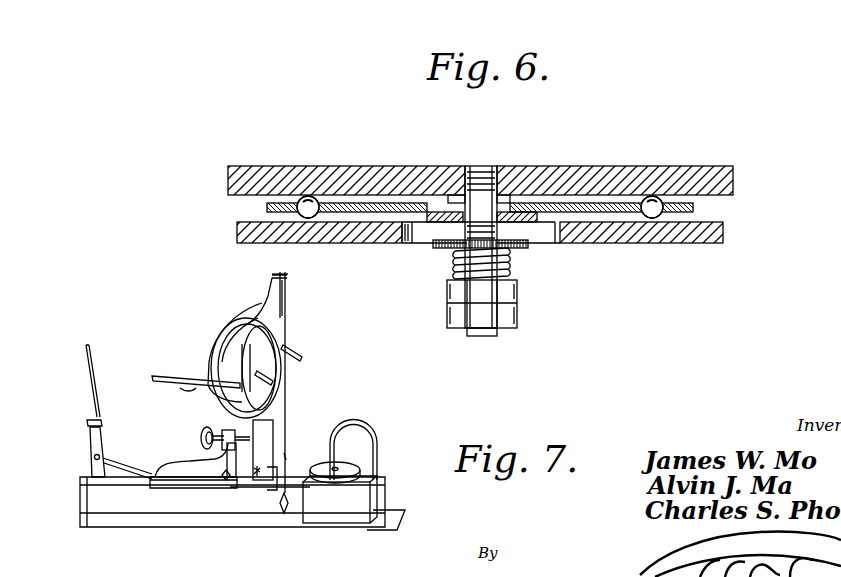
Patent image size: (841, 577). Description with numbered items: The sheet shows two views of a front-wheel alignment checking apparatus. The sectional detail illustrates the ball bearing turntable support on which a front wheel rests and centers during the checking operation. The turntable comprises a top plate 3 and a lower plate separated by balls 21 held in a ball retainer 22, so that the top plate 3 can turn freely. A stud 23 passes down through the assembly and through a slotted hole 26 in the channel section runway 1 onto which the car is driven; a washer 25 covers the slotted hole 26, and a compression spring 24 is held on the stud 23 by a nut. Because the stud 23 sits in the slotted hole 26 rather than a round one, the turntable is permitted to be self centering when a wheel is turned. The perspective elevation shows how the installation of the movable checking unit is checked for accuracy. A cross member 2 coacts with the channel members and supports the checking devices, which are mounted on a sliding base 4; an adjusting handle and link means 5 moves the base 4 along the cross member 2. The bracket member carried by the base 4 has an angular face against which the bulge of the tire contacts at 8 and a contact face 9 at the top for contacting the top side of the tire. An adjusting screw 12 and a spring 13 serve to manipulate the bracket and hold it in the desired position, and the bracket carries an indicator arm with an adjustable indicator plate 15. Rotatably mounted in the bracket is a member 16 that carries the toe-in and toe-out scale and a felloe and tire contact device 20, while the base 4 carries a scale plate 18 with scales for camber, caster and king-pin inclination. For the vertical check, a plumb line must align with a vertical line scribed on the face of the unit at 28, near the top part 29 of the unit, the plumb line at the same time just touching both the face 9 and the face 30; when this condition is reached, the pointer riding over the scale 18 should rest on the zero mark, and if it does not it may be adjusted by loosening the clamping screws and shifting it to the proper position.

In FIG. 7, the channel section runway 1 is at (347, 478).
In FIG. 7, the cross member 2 is at (130, 498).
In FIG. 6, the ball bearing turntable top plate 3 is at (635, 167).
In FIG. 7, the ball bearing turntable top plate 3 is at (350, 470).
In FIG. 7, the sliding base 4 is at (180, 478).
In FIG. 7, the adjusting handle and link means 5 is at (106, 437).
In FIG. 7, the angular tire contact face 8 is at (250, 490).
In FIG. 7, the contact face 9 is at (289, 305).
In FIG. 7, the adjusting screw 12 is at (218, 476).
In FIG. 7, the spring 13 is at (262, 476).
In FIG. 7, the adjustable indicator plate 15 is at (189, 384).
In FIG. 7, the rotatable member 16 is at (267, 333).
In FIG. 7, the scale plate 18 is at (223, 421).
In FIG. 7, the tire contact device 20 is at (287, 368).
In FIG. 6, the ball 21 is at (647, 220).
In FIG. 6, the ball retainer 22 is at (695, 207).
In FIG. 6, the stud 23 is at (480, 167).
In FIG. 6, the compression spring 24 is at (512, 268).
In FIG. 6, the washer 25 is at (437, 245).
In FIG. 6, the slotted hole 26 is at (410, 233).
In FIG. 7, the vertical scribed line 28 is at (286, 293).
In FIG. 7, the cap 29 is at (295, 259).
In FIG. 7, the contact face 30 is at (286, 456).